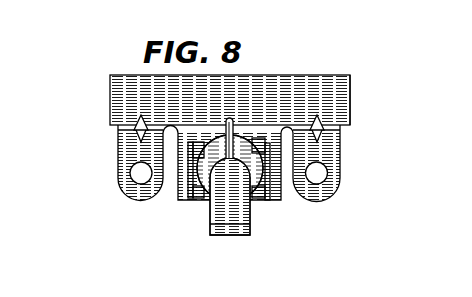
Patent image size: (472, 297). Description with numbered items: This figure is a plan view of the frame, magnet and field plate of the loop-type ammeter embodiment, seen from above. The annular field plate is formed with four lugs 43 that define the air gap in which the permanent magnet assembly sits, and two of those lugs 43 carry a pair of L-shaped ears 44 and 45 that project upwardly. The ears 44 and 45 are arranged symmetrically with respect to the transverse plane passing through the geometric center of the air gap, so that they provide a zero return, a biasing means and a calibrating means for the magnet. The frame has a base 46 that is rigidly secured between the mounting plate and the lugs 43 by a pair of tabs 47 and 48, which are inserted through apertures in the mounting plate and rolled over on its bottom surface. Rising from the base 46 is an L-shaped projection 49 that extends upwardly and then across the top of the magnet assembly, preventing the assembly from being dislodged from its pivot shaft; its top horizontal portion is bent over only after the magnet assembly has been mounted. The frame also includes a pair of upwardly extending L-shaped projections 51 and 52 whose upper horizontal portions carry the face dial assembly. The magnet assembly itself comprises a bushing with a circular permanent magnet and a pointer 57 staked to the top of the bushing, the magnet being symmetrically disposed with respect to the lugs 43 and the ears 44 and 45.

The lugs 43 is at (200, 198).
The L-shaped ear 44 is at (189, 198).
The L-shaped ear 45 is at (273, 198).
The base 46 is at (258, 78).
The tab 47 is at (110, 93).
The tab 48 is at (350, 97).
The L-shaped projection 49 is at (247, 219).
The L-shaped projection 51 is at (340, 147).
The L-shaped projection 52 is at (117, 147).
The pointer 57 is at (231, 118).